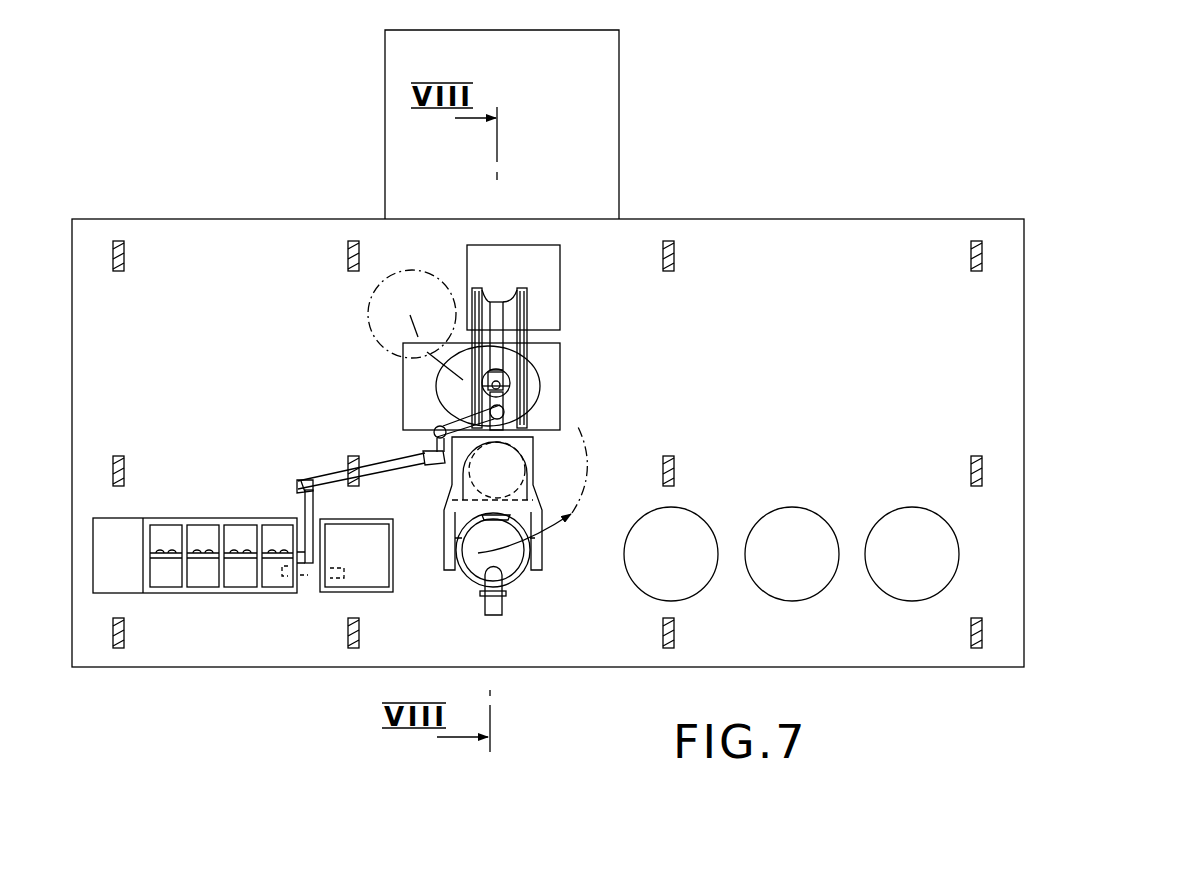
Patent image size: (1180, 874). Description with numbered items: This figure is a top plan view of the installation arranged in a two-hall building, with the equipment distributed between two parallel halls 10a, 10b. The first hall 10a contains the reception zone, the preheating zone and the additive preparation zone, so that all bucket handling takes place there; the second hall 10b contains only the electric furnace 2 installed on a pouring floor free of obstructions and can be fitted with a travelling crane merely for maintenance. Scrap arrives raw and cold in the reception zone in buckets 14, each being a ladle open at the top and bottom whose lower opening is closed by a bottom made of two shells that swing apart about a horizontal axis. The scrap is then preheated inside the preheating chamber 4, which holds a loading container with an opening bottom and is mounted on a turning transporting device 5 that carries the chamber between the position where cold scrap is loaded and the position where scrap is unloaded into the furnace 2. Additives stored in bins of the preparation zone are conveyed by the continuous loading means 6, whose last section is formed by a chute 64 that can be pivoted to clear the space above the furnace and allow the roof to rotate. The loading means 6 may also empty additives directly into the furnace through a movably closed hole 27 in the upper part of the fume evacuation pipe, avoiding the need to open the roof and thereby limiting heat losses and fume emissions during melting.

The electric furnace 2 is at (571, 356).
The preheating chamber 4 is at (519, 580).
The transporting device 5 is at (542, 486).
The continuous loading means 6 is at (436, 427).
The hall 10a is at (971, 557).
The hall 10b is at (943, 352).
The bucket 14 is at (699, 585).
The hole 27 is at (508, 397).
The chute 64 is at (390, 458).